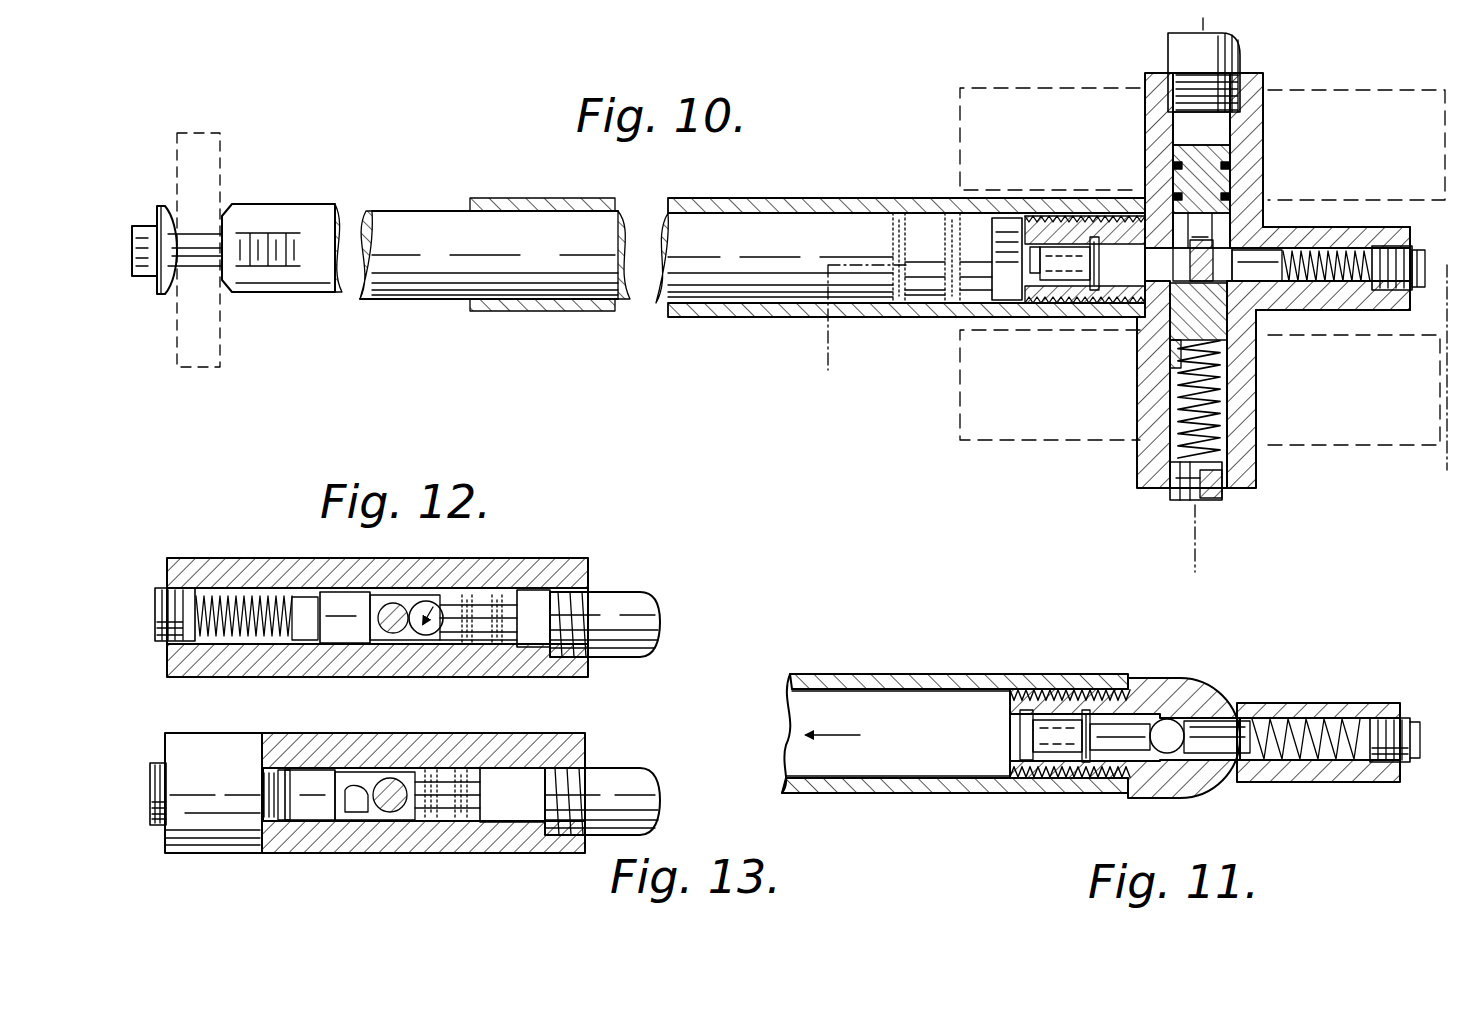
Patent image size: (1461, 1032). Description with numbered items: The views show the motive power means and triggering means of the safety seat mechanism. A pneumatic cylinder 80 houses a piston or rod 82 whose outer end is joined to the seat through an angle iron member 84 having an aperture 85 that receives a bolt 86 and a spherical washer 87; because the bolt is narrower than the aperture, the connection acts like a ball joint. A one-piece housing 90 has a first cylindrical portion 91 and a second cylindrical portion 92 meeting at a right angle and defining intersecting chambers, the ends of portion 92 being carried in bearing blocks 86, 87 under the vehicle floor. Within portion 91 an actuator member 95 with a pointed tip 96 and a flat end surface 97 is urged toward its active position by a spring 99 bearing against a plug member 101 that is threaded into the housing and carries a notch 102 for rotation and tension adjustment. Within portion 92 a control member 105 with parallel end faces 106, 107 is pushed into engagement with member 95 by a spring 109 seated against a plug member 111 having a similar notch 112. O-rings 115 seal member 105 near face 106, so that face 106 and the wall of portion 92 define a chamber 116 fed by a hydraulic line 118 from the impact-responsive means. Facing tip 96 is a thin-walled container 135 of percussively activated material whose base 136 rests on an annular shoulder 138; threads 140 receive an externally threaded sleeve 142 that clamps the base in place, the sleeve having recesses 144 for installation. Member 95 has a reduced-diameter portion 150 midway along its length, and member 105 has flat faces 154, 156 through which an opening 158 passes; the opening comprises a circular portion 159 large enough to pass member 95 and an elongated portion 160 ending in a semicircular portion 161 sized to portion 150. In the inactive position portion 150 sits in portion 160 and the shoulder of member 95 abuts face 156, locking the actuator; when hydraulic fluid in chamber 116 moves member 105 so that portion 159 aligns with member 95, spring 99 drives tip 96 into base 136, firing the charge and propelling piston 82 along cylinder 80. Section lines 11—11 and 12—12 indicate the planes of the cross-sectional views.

In FIG. 10, the section line 11— 11 is at (828, 382).
In FIG. 10, the section line 12— 12 is at (1125, 50).
In FIG. 10, the pneumatic cylinder 80 is at (676, 313).
In FIG. 11, the pneumatic cylinder 80 is at (844, 672).
In FIG. 10, the piston rod 82 is at (340, 292).
In FIG. 10, the angle iron member 84 is at (196, 368).
In FIG. 10, the aperture 85 is at (205, 268).
In FIG. 10, the bolt 86 is at (145, 228).
In FIG. 10, the spherical washer 87 is at (161, 296).
In FIG. 10, the housing 90 is at (1143, 80).
In FIG. 10, the first cylindrical portion 91 is at (1334, 228).
In FIG. 11, the first cylindrical portion 91 is at (1312, 704).
In FIG. 10, the second cylindrical portion 92 is at (1225, 128).
In FIG. 12, the second cylindrical portion 92 is at (288, 566).
In FIG. 13, the second cylindrical portion 92 is at (180, 850).
In FIG. 11, the second cylindrical portion 92 is at (1203, 692).
In FIG. 10, the actuator member 95 is at (1120, 307).
In FIG. 12, the actuator member 95 is at (421, 606).
In FIG. 13, the actuator member 95 is at (398, 822).
In FIG. 11, the actuator member 95 is at (1110, 766).
In FIG. 10, the pointed tip 96 is at (1102, 308).
In FIG. 11, the pointed tip 96 is at (1107, 688).
In FIG. 10, the flat end surface 97 is at (1275, 290).
In FIG. 10, the spring 99 is at (1334, 286).
In FIG. 11, the spring 99 is at (1310, 762).
In FIG. 10, the plug member 101 is at (1394, 248).
In FIG. 11, the plug member 101 is at (1412, 718).
In FIG. 10, the notch 102 is at (1426, 262).
In FIG. 10, the control member 105 is at (1236, 183).
In FIG. 12, the control member 105 is at (346, 656).
In FIG. 13, the control member 105 is at (294, 786).
In FIG. 11, the control member 105 is at (1197, 762).
In FIG. 10, the end face 106 is at (1182, 152).
In FIG. 10, the end face 107 is at (1165, 362).
In FIG. 10, the spring 109 is at (1178, 432).
In FIG. 12, the spring 109 is at (235, 590).
In FIG. 13, the spring 109 is at (265, 790).
In FIG. 10, the plug member 111 is at (1170, 495).
In FIG. 12, the plug member 111 is at (158, 610).
In FIG. 13, the plug member 111 is at (150, 778).
In FIG. 10, the notch 112 is at (1200, 502).
In FIG. 10, the O-rings 115 is at (1174, 165).
In FIG. 10, the chamber 116 is at (1178, 142).
In FIG. 12, the chamber 116 is at (529, 607).
In FIG. 13, the chamber 116 is at (500, 820).
In FIG. 12, the conduit 118 is at (650, 607).
In FIG. 13, the conduit 118 is at (640, 777).
In FIG. 10, the container 135 is at (1055, 247).
In FIG. 11, the container 135 is at (1040, 736).
In FIG. 10, the base 136 is at (1078, 247).
In FIG. 11, the base 136 is at (1068, 770).
In FIG. 10, the annular shoulder 138 is at (1094, 237).
In FIG. 10, the threads 140 is at (1047, 213).
In FIG. 10, the externally threaded sleeve 142 is at (988, 243).
In FIG. 11, the externally threaded sleeve 142 is at (1008, 771).
In FIG. 10, the recess 144 is at (1030, 262).
In FIG. 10, the reduced diameter cylindrical portion 150 is at (1214, 252).
In FIG. 12, the reduced diameter cylindrical portion 150 is at (381, 600).
In FIG. 13, the reduced diameter cylindrical portion 150 is at (390, 778).
In FIG. 11, the reduced diameter cylindrical portion 150 is at (1168, 712).
In FIG. 10, the flat face 154 is at (1182, 236).
In FIG. 10, the flat face 156 is at (1258, 230).
In FIG. 12, the opening 158 is at (396, 636).
In FIG. 12, the circular portion 159 is at (429, 637).
In FIG. 13, the elongated portion 160 is at (357, 816).
In FIG. 13, the semicircular portion 161 is at (340, 853).